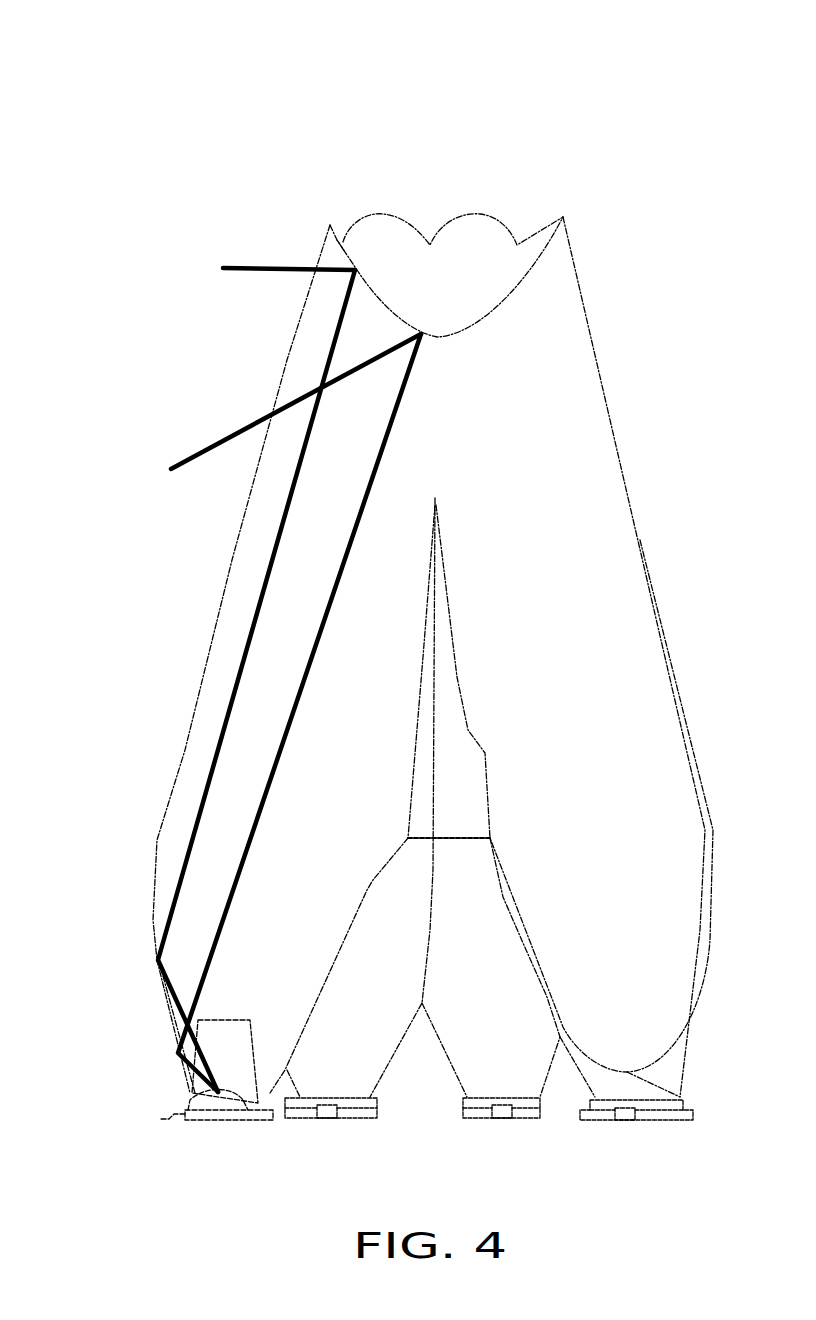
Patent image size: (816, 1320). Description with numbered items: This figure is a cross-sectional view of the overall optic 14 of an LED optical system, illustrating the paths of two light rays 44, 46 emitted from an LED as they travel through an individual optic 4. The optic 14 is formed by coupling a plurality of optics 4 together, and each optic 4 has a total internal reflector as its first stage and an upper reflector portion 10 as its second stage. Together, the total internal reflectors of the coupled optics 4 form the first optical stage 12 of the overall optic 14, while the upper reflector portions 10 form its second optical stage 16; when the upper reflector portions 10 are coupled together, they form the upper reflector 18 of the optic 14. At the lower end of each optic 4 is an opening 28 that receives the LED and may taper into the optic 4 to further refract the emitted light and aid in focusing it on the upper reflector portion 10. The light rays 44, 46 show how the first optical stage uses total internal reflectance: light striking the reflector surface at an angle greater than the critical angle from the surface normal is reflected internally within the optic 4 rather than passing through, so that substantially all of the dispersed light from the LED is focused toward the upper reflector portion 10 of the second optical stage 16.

The optic 14 is at (140, 123).
The upper reflector portion 10 is at (342, 238).
The second optical stage 16 is at (332, 247).
The upper reflector 18 is at (461, 287).
The light ray 44 is at (248, 268).
The light ray 46 is at (201, 448).
The optic 4 is at (228, 612).
The first optical stage 12 is at (188, 757).
The opening 28 is at (243, 1063).